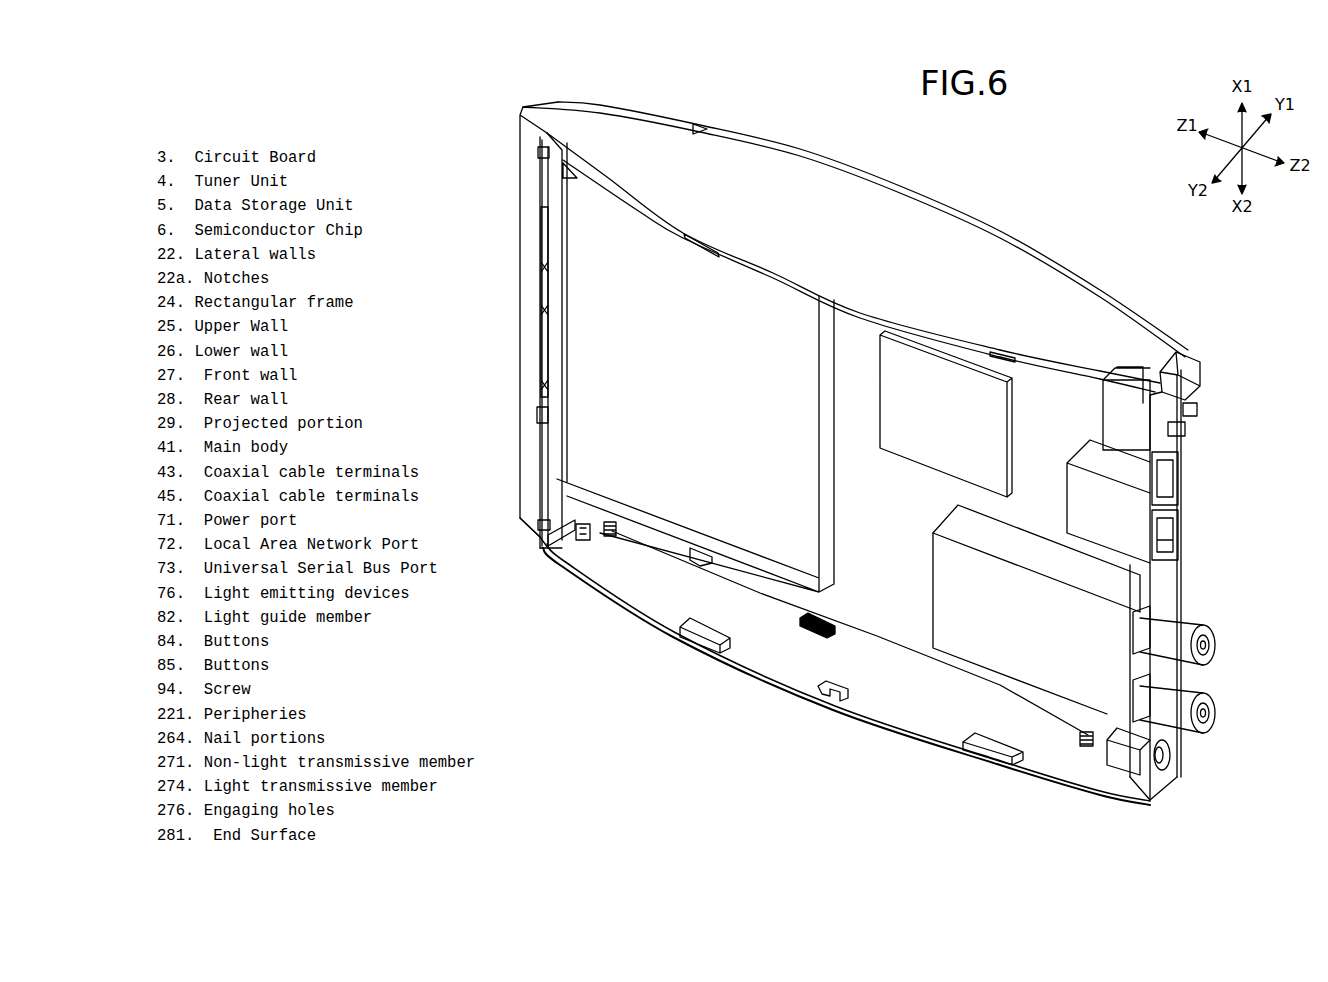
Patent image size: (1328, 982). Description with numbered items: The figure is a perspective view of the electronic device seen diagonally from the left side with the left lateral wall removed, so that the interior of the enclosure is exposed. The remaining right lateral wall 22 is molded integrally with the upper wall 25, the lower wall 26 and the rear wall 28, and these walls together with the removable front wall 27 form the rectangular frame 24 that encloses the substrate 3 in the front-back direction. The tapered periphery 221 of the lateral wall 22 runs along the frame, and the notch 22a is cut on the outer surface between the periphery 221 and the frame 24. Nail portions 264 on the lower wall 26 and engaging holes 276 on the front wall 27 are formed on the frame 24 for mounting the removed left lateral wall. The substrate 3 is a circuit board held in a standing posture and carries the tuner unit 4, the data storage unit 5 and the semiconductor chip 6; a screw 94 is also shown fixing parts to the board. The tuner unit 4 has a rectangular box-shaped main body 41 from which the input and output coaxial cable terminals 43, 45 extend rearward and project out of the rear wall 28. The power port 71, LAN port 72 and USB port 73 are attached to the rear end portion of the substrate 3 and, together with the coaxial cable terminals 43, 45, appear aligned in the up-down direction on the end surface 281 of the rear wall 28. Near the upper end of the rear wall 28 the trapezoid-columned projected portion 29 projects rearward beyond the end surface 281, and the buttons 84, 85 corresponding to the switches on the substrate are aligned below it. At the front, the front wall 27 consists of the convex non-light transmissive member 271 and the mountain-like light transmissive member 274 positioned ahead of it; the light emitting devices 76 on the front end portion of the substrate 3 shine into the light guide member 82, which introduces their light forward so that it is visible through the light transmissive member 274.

The substrate 3 is at (878, 604).
The tuner unit 4 is at (1067, 673).
The data storage unit 5 is at (593, 211).
The semiconductor chip 6 is at (920, 447).
The lateral wall 22 is at (862, 173).
The notch 22a is at (700, 126).
The rectangular frame 24 is at (808, 725).
The upper wall 25 is at (975, 248).
The lower wall 26 is at (884, 720).
The front wall 27 is at (500, 342).
The rear wall 28 is at (1182, 573).
The projected portion 29 is at (1181, 372).
The main body 41 is at (960, 652).
The coaxial cable terminal 43 is at (1217, 634).
The coaxial cable terminal 45 is at (1218, 706).
The power port 71 is at (1122, 766).
The LAN port 72 is at (1170, 532).
The USB port 73 is at (1170, 488).
The light emitting device 76 is at (585, 541).
The light guide member 82 is at (560, 535).
The button 84 is at (1185, 431).
The button 85 is at (1197, 410).
The screw 94 is at (598, 532).
The periphery 221 is at (780, 152).
The nail portion 264 is at (690, 636).
The non-light transmissive member 271 is at (557, 470).
The light transmissive member 274 is at (521, 389).
The engaging hole 276 is at (545, 238).
The end surface 281 is at (1173, 596).